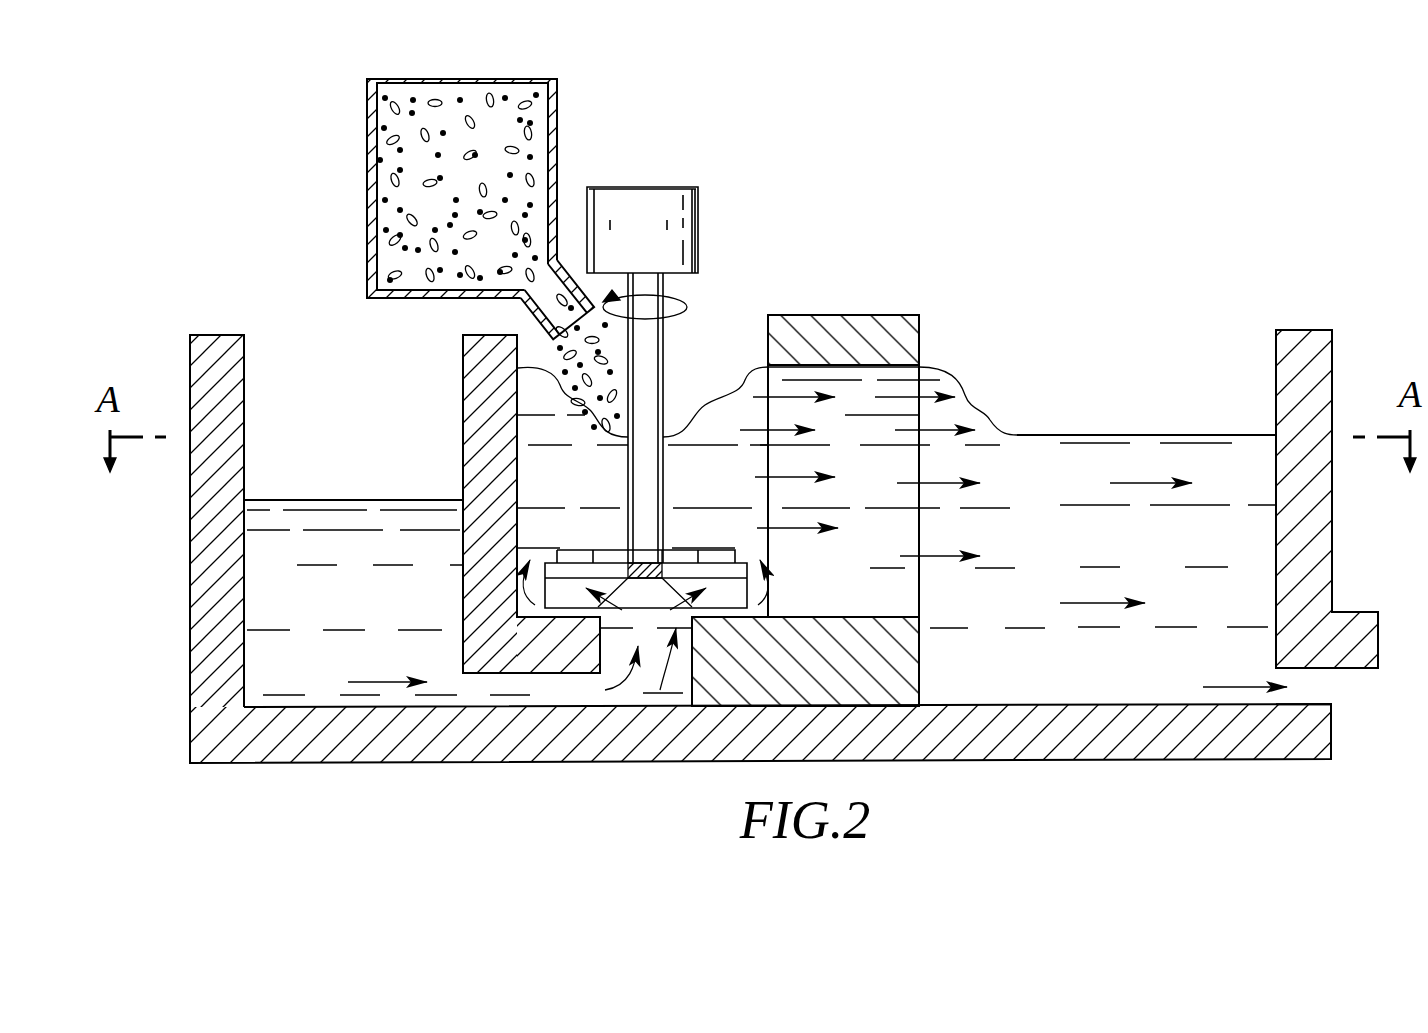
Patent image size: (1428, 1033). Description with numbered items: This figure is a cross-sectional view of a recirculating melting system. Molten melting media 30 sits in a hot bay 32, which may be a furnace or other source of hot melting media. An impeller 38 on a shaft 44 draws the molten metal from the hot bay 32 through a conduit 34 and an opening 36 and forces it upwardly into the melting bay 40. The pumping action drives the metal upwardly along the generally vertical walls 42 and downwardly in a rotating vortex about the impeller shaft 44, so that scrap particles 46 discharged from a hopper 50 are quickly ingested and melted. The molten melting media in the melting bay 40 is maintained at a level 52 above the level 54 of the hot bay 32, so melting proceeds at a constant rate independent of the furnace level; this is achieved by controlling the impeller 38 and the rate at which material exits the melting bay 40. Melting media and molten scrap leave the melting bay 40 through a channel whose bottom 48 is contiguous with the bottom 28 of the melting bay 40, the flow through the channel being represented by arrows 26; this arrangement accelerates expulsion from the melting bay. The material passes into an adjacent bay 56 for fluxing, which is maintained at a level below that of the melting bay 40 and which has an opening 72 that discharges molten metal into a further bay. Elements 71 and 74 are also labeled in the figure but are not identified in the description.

The flow arrows 26 is at (943, 430).
The bottom of melting bay 28 is at (775, 611).
The molten melting media 30 is at (265, 607).
The hot bay 32 is at (190, 565).
The conduit 34 is at (518, 688).
The opening 36 is at (637, 640).
The impeller 38 is at (752, 572).
The melting bay 40 is at (710, 334).
The walls 42 is at (768, 320).
The impeller shaft 44 is at (668, 290).
The scrap particles 46 is at (557, 268).
The bottom of channel 48 is at (860, 611).
The hopper 50 is at (367, 152).
The level of melting bay 52 is at (720, 395).
The level of hot bay 54 is at (362, 500).
The fluxing bay 56 is at (1143, 389).
The outlet wall 71 is at (1205, 435).
The opening 72 is at (1305, 676).
The outlet floor 74 is at (1170, 700).